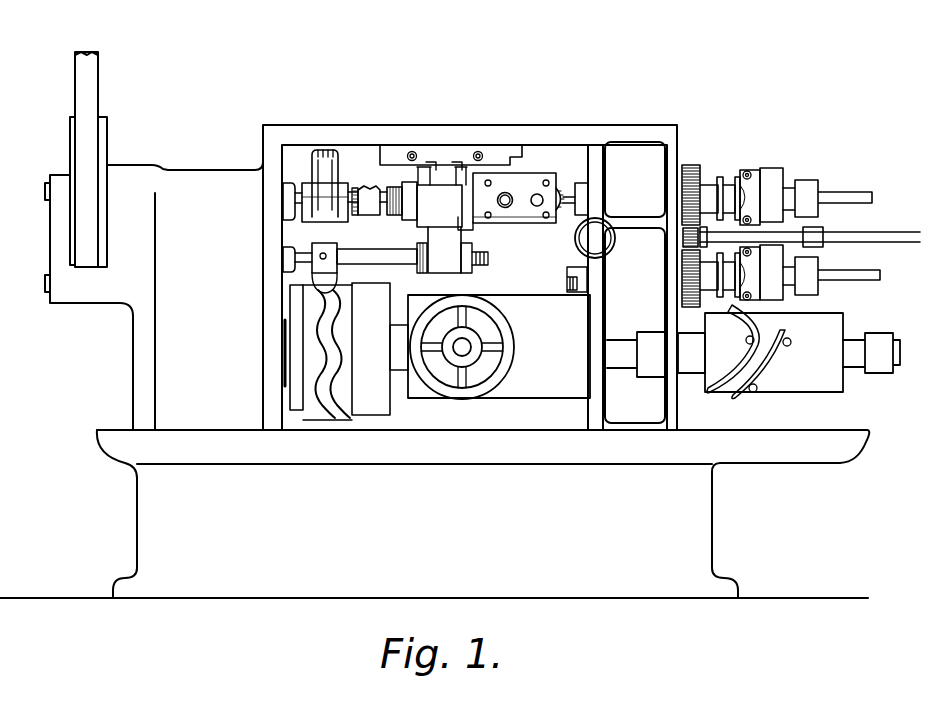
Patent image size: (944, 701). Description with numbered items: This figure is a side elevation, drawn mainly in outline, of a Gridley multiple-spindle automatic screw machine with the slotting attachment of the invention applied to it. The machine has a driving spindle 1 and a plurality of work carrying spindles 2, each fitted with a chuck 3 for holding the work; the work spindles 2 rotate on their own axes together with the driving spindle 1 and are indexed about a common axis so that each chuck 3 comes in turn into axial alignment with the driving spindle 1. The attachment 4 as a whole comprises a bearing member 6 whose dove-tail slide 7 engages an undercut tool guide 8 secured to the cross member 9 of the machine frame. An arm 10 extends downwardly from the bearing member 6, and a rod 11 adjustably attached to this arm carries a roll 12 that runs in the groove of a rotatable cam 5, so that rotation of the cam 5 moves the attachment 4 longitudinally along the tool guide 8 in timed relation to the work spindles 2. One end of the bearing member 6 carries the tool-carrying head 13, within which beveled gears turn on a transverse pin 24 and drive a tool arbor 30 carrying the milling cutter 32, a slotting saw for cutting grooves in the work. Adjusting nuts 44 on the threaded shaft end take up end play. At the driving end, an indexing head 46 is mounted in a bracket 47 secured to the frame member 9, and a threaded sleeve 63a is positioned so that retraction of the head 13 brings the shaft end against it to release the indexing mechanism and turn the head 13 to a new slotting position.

The driving spindle 1 is at (291, 196).
The work carrying spindles 2 is at (712, 195).
The chuck 3 is at (768, 177).
The attachment 4 is at (439, 206).
The rotatable cam 5 is at (303, 337).
The bearing member 6 is at (417, 177).
The dove-tail slide 7 is at (438, 157).
The tool guide 8 is at (515, 144).
The cross member 9 is at (557, 127).
The arm 10 is at (444, 250).
The rod 11 is at (367, 258).
The roll 12 is at (325, 275).
The tool-carrying head 13 is at (525, 188).
The pin 24 is at (506, 205).
The tool arbor 30 is at (537, 205).
The milling cutter 32 is at (562, 213).
The adjusting nuts 44 is at (393, 216).
The head 46 is at (325, 212).
The bracket 47 is at (341, 153).
The sleeve 63a is at (365, 205).